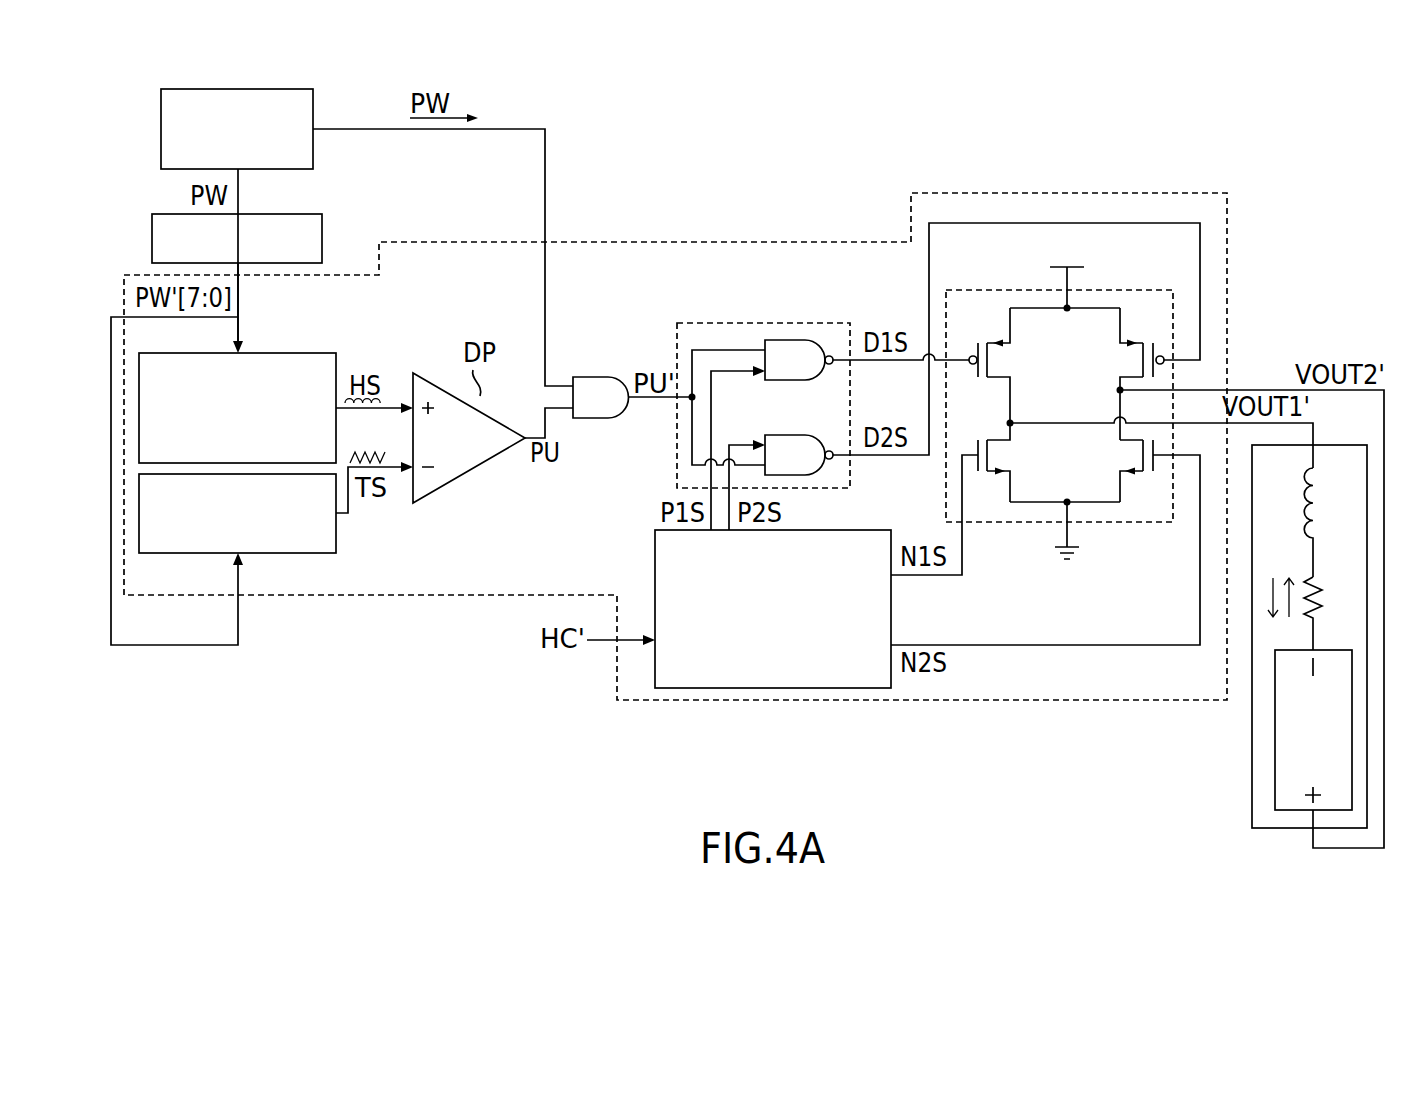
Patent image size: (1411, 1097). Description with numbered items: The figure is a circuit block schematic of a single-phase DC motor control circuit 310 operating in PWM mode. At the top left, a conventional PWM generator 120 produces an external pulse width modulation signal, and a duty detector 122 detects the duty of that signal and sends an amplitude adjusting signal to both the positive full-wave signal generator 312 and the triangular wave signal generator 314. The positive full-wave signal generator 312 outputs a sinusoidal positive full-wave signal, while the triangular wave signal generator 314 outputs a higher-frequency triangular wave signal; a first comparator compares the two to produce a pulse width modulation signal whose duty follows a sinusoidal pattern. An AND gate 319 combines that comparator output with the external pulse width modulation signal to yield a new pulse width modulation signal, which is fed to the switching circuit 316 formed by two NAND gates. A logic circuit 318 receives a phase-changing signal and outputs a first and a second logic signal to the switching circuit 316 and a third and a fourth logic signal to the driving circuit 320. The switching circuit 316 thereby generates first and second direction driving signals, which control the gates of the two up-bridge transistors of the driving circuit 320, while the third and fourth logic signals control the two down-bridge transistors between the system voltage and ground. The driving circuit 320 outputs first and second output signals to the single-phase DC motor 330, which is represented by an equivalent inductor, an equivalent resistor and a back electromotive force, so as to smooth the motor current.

The PWM generator 120 is at (245, 89).
The duty detector 122 is at (297, 213).
The single-phase DC motor control circuit 310 is at (680, 240).
The positive full-wave signal generator 312 is at (313, 353).
The triangular wave signal generator 314 is at (160, 554).
The switching circuit 316 is at (797, 322).
The logic circuit 318 is at (770, 689).
The AND gate 319 is at (596, 376).
The driving circuit 320 is at (1135, 525).
The single-phase DC motor 330 is at (1252, 764).